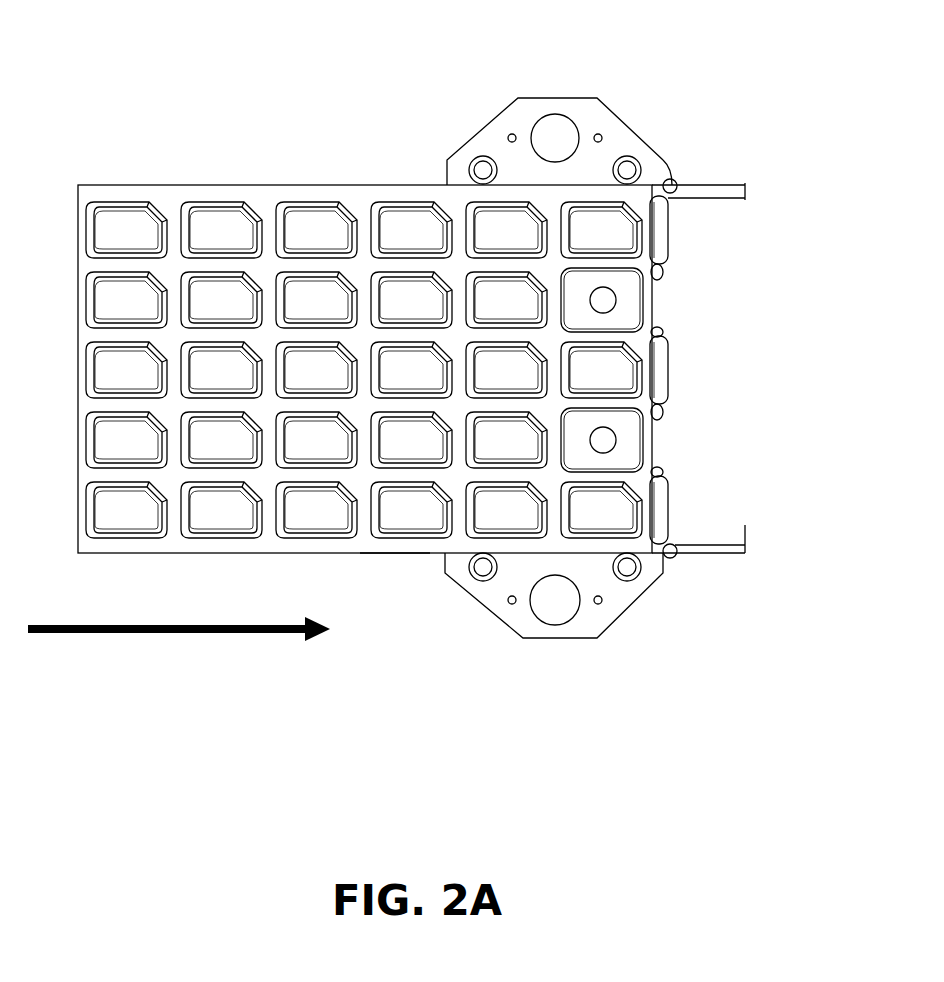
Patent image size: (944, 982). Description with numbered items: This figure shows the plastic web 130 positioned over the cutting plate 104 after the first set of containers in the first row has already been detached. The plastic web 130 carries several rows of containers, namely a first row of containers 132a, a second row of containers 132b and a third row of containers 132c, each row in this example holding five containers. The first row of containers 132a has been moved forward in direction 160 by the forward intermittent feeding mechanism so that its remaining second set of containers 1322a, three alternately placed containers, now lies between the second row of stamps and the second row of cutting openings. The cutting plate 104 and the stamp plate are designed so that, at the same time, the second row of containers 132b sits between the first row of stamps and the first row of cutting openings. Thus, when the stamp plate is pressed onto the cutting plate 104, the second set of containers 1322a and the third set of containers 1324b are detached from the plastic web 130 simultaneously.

The cutting plate 104 is at (622, 118).
The plastic web 130 is at (145, 185).
The first row of containers 132a is at (597, 575).
The second row of containers 132b is at (512, 575).
The third row of containers 132c is at (395, 571).
The second set of containers 1322a is at (655, 500).
The third set of containers 1324b is at (465, 273).
The direction 160 is at (140, 633).